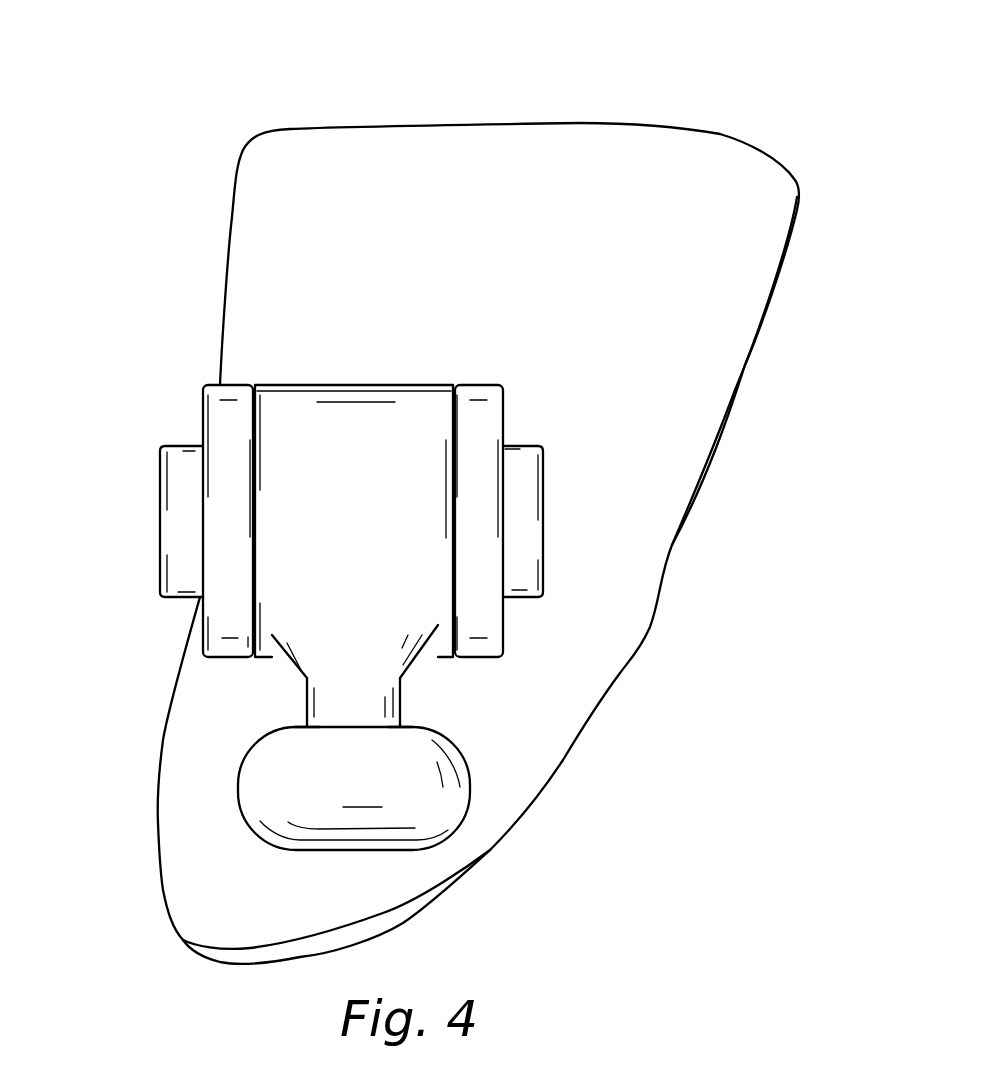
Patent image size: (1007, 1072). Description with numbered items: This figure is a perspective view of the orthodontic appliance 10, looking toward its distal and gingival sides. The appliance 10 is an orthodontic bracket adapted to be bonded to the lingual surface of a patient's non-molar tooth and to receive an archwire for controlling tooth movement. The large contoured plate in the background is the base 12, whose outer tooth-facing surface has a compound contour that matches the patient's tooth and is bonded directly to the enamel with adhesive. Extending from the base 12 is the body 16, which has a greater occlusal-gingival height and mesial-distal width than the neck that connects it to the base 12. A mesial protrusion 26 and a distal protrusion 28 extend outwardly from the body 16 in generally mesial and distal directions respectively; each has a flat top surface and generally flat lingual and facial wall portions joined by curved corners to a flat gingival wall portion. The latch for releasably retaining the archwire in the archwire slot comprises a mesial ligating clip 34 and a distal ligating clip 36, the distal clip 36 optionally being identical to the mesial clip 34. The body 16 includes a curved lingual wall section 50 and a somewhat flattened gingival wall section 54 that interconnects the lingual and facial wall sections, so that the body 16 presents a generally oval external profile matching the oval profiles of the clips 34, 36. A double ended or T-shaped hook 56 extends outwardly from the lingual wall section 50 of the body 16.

The orthodontic appliance 10 is at (267, 93).
The base 12 is at (723, 318).
The body 16 is at (367, 383).
The mesial protrusion 26 is at (158, 532).
The distal protrusion 28 is at (552, 545).
The mesial ligating clip 34 is at (203, 628).
The distal ligating clip 36 is at (513, 630).
The curved lingual wall section 50 is at (287, 400).
The gingival wall section 54 is at (268, 657).
The T-shaped hook 56 is at (428, 808).